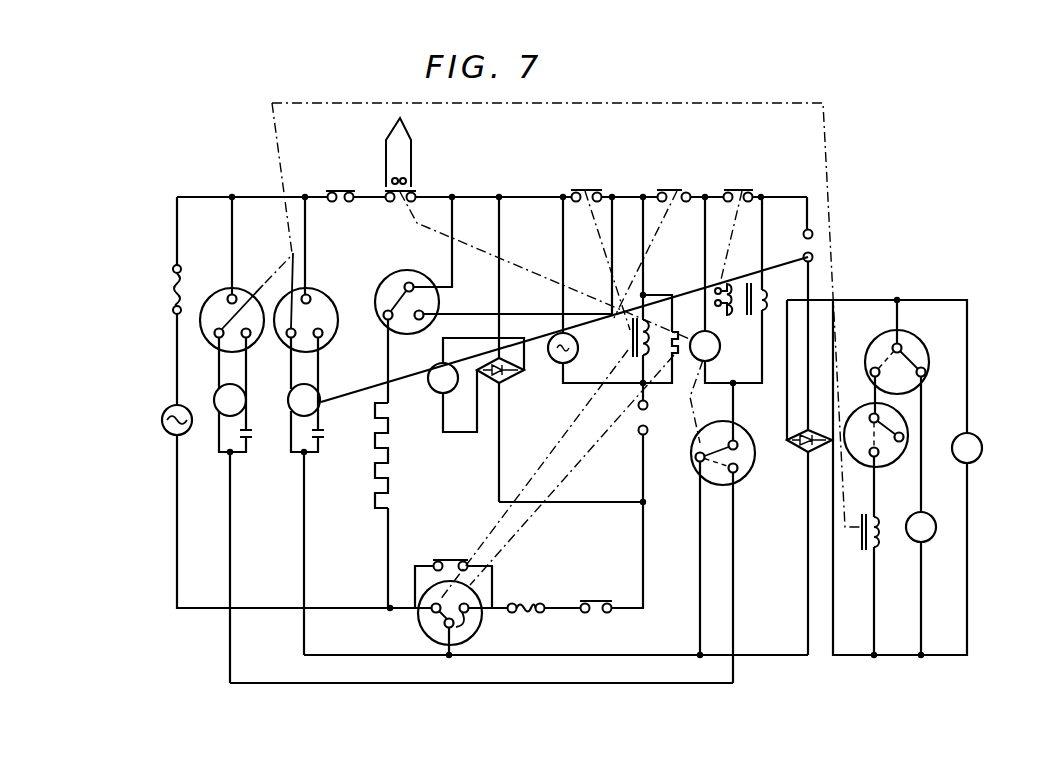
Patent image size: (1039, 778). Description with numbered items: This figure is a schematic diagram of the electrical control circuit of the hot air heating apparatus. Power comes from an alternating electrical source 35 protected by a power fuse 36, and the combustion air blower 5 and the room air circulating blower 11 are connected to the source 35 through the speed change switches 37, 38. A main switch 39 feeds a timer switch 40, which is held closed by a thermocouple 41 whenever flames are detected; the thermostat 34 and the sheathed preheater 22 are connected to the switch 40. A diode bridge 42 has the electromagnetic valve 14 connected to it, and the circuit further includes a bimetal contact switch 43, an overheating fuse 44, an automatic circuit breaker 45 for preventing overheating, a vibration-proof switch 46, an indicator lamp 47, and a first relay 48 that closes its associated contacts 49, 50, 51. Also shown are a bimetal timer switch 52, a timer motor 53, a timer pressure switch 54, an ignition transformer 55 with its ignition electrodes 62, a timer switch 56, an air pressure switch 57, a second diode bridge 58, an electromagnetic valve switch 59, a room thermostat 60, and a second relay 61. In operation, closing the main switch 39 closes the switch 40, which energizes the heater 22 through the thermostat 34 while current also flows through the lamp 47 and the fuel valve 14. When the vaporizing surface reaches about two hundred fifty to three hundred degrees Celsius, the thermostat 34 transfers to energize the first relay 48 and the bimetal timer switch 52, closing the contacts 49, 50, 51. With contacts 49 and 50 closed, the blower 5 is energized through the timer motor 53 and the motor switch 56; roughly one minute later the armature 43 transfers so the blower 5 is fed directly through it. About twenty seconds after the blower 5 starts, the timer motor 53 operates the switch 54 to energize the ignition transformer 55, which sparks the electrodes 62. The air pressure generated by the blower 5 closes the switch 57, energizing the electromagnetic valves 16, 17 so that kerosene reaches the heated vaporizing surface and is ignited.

The combustion air blower 5 is at (292, 432).
The room air circulating blower 11 is at (218, 432).
The electromagnetic valve 14 is at (428, 385).
The electromagnetic valve 16 is at (981, 441).
The electromagnetic valve 17 is at (940, 512).
The sheathed preheater 22 is at (390, 456).
The thermostat 34 is at (394, 288).
The alternating electrical source 35 is at (165, 432).
The power fuse 36 is at (172, 293).
The speed change switch 37 is at (226, 313).
The speed change switch 38 is at (302, 322).
The main switch 39 is at (345, 189).
The timer switch 40 is at (418, 192).
The thermocouple 41 is at (410, 128).
The diode bridge 42 is at (500, 385).
The bimetal contact switch 43 is at (480, 628).
The overheating fuse 44 is at (524, 604).
The automatic circuit breaker 45 is at (597, 599).
The vibration-proof switch 46 is at (650, 428).
The indicator lamp 47 is at (552, 360).
The first relay 48 is at (632, 340).
The relay contact 49 is at (600, 190).
The relay contact 50 is at (688, 190).
The relay contact 51 is at (450, 560).
The bimetal timer switch 52 is at (676, 365).
The timer motor 53 is at (699, 334).
The timer pressure switch 54 is at (752, 190).
The ignition transformer 55 is at (767, 303).
The timer switch 56 is at (742, 440).
The air pressure switch 57 is at (815, 236).
The diode bridge 58 is at (800, 455).
The electromagnetic valve switch 59 is at (928, 348).
The room thermostat 60 is at (866, 412).
The second relay 61 is at (863, 548).
The ignition electrodes 62 is at (718, 283).